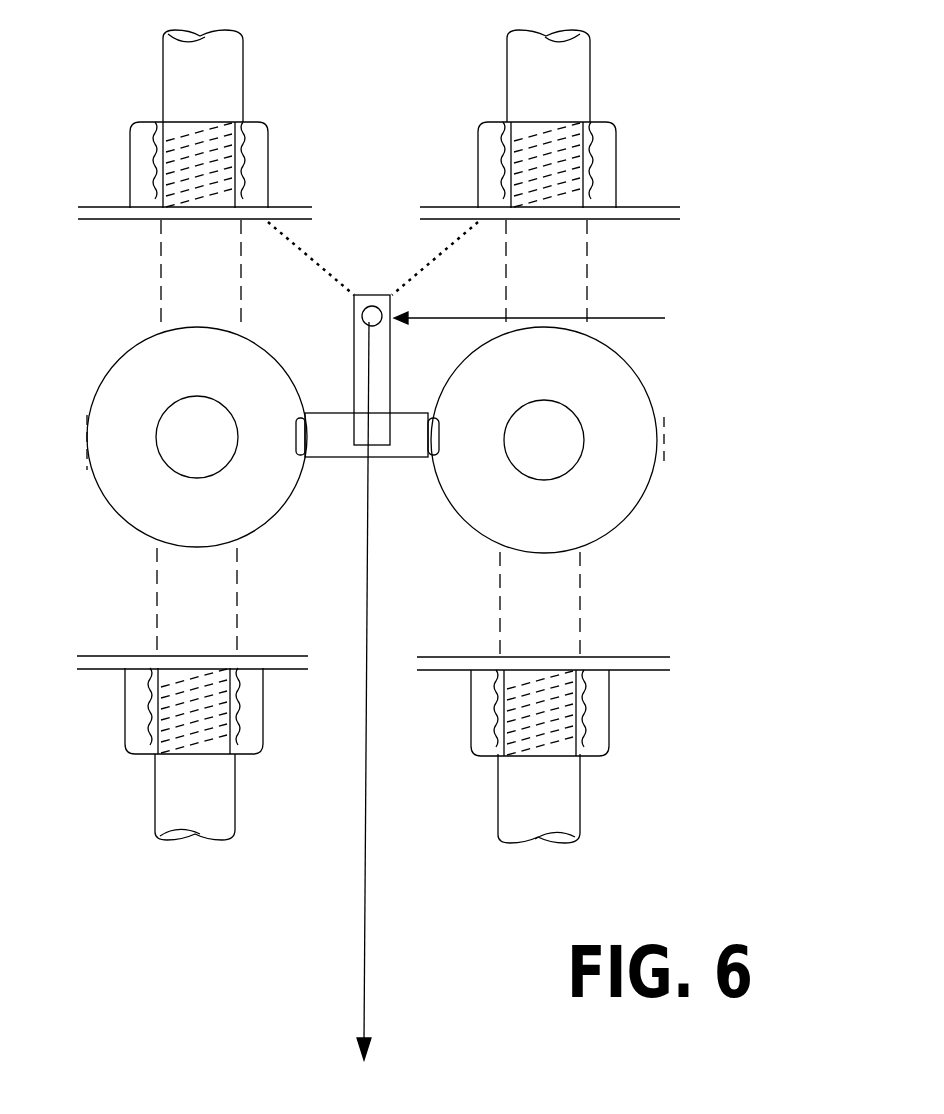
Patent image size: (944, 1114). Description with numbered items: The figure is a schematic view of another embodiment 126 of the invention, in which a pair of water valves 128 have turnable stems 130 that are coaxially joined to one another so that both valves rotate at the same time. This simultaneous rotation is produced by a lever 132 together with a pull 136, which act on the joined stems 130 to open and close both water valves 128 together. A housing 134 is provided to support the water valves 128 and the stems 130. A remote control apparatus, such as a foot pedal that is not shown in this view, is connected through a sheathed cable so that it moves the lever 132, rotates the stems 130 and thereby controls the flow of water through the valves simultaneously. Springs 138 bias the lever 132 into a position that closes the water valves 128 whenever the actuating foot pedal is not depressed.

The embodiment 126 is at (696, 260).
The water valves 128 is at (93, 385).
The turnable stems 130 is at (331, 448).
The lever 132 is at (383, 370).
The housing 134 is at (633, 655).
The pull 136 is at (365, 937).
The springs 138 is at (432, 250).